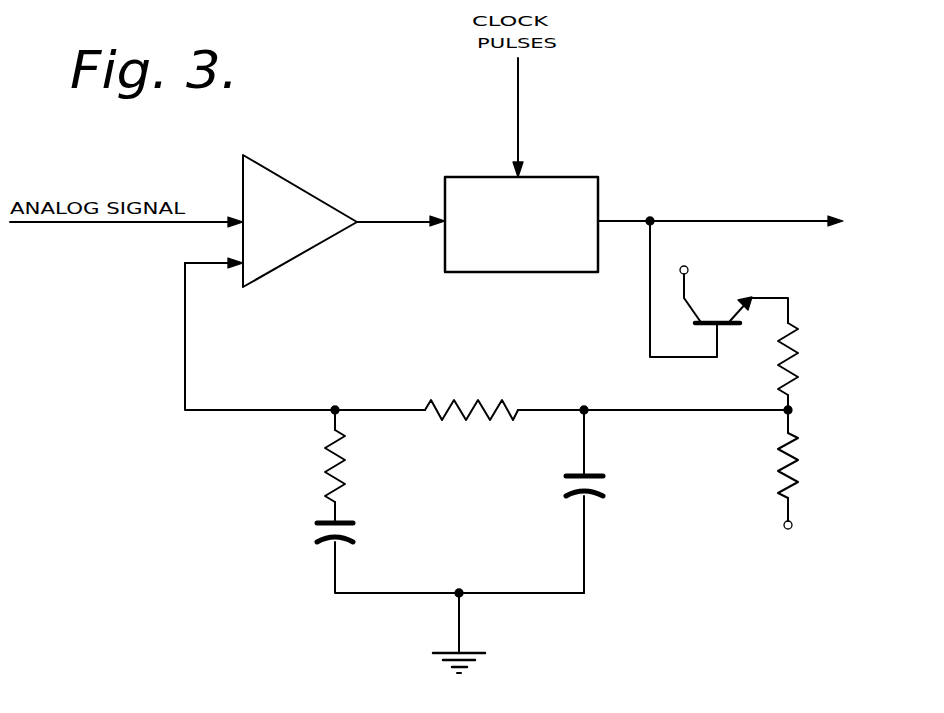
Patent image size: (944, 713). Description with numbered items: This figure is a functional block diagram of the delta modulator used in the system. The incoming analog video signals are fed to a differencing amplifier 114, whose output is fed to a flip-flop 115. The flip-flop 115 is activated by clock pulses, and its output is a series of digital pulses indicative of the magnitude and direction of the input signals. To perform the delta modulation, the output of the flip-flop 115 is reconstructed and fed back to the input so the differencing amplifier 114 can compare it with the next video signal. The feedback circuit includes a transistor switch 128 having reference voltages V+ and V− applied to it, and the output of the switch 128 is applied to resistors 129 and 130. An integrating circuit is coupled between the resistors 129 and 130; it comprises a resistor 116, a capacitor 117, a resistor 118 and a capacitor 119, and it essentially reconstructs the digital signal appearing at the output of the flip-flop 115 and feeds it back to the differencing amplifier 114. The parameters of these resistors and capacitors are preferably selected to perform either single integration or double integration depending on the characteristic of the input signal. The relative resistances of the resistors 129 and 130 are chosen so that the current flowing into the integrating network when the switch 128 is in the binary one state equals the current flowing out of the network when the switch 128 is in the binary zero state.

The differencing amplifier 114 is at (318, 199).
The flip-flop 115 is at (582, 177).
The resistor 116 is at (470, 400).
The capacitor 117 is at (604, 486).
The resistor 118 is at (326, 462).
The capacitor 119 is at (317, 536).
The transistor switch 128 is at (722, 320).
The resistor 129 is at (796, 348).
The resistor 130 is at (798, 462).